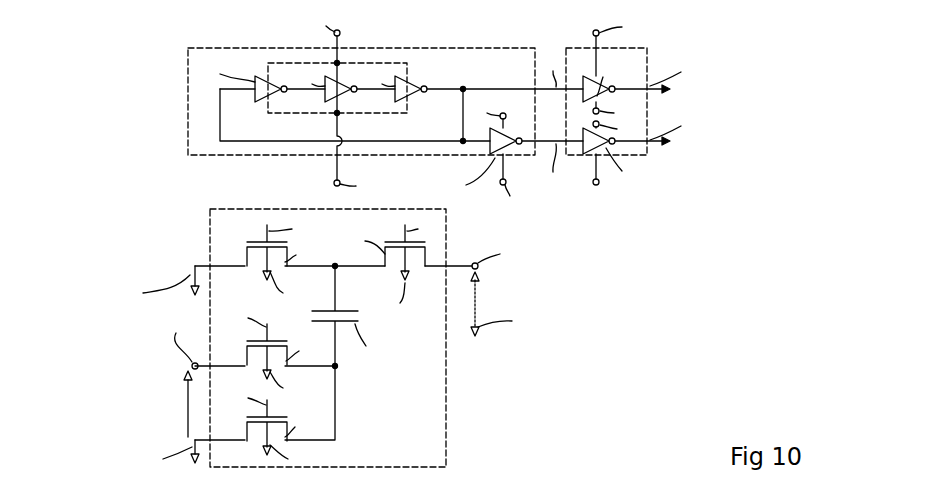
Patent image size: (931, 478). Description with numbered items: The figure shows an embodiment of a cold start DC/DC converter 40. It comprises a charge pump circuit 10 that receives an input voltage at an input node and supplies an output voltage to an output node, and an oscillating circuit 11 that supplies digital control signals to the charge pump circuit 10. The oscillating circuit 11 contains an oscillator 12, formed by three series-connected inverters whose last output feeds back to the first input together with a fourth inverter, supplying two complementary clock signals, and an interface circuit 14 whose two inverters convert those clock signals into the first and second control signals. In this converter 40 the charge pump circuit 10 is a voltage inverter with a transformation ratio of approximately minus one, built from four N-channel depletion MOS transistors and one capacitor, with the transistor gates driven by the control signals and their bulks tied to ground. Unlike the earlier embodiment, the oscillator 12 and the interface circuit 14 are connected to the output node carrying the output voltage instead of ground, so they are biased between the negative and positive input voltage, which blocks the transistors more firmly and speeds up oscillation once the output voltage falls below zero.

The charge pump circuit 10 is at (447, 226).
The oscillating circuit 11 is at (187, 53).
The oscillator 12 is at (266, 49).
The interface circuit 14 is at (625, 48).
The converter 40 is at (733, 77).